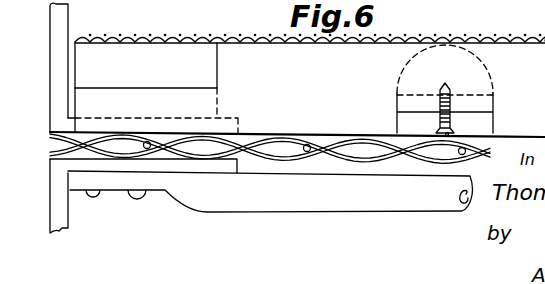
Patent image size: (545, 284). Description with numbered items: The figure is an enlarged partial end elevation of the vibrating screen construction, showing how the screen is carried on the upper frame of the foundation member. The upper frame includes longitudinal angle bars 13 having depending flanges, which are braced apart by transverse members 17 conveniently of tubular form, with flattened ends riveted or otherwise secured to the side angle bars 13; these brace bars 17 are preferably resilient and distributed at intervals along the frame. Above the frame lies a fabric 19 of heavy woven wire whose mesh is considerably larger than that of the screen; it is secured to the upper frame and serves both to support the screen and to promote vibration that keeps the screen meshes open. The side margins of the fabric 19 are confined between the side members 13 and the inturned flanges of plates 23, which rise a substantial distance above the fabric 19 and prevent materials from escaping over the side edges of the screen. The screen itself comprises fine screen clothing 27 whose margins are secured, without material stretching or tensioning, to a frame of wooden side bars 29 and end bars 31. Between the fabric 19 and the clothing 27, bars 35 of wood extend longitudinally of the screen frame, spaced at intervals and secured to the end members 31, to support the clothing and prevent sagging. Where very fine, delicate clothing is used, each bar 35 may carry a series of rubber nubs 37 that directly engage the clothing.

The longitudinal angle bars 13 is at (68, 212).
The transverse members 17 is at (363, 212).
The fabric 19 is at (263, 152).
The plates 23 is at (50, 42).
The fine screen clothing 27 is at (148, 36).
The side bars 29 is at (153, 55).
The end bars 31 is at (270, 50).
The bars 35 is at (482, 122).
The rubber nubs 37 is at (400, 72).